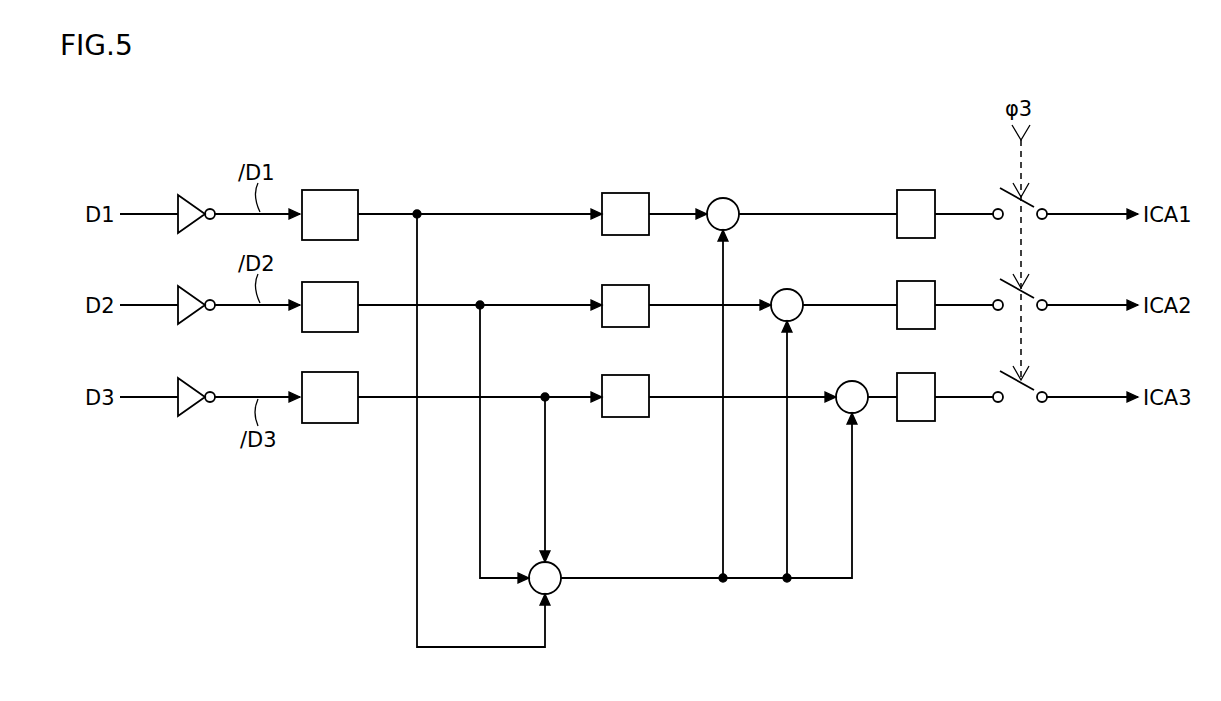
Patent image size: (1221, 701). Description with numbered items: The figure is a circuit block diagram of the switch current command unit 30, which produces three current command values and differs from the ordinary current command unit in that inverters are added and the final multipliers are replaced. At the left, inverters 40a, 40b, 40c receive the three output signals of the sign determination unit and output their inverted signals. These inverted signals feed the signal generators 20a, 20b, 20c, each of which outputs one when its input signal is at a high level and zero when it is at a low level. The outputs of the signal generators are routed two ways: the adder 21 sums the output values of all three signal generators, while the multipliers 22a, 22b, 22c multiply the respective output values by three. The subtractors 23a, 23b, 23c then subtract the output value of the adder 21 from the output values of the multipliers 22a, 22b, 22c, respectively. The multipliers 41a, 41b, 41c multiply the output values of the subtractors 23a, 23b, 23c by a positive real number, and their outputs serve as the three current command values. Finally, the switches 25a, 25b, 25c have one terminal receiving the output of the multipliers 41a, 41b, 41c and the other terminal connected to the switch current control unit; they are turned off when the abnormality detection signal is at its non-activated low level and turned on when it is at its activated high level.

The switch current command unit 30 is at (206, 119).
The inverter 40a is at (192, 202).
The inverter 40b is at (192, 293).
The inverter 40c is at (192, 385).
The signal generator 20a is at (330, 190).
The signal generator 20b is at (330, 282).
The signal generator 20c is at (330, 372).
The multiplier 22a is at (627, 193).
The multiplier 22b is at (627, 285).
The multiplier 22c is at (627, 375).
The subtractor 23a is at (722, 197).
The subtractor 23b is at (787, 289).
The subtractor 23c is at (852, 381).
The multiplier 41a is at (915, 190).
The multiplier 41b is at (915, 281).
The multiplier 41c is at (915, 373).
The switch 25a is at (1030, 200).
The switch 25b is at (1030, 291).
The switch 25c is at (1030, 383).
The adder 21 is at (556, 566).